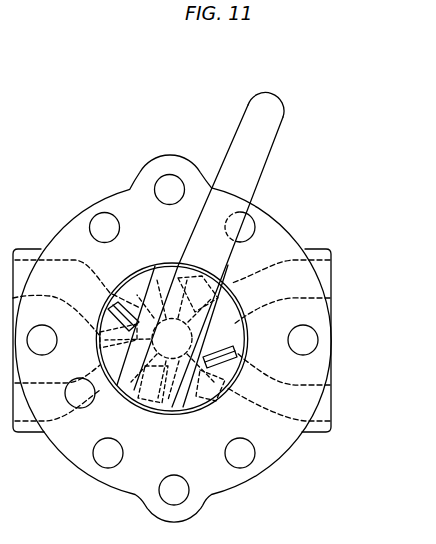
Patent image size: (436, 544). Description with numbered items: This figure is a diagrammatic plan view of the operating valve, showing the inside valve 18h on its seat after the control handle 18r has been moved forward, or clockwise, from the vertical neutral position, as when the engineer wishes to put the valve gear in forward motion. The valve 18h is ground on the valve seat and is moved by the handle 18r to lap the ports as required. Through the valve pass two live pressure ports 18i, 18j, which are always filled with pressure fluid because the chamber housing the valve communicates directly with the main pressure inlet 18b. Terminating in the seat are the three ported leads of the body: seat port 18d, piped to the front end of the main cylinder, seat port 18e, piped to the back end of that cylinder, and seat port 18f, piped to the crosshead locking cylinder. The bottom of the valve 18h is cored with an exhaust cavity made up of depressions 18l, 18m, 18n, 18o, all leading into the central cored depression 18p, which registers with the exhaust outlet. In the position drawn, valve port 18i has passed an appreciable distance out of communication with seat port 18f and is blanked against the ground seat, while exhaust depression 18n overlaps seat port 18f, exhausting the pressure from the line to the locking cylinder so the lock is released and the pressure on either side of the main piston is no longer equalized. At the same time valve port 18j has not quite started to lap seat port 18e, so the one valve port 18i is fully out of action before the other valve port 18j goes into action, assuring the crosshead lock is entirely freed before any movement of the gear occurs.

The main pressure inlet 18b is at (78, 397).
The seat port 18d is at (220, 316).
The seat port 18e is at (222, 396).
The seat port 18f is at (101, 336).
The valve 18h is at (195, 408).
The valve port 18i is at (120, 301).
The valve port 18j is at (233, 350).
The depression 18l is at (183, 288).
The depression 18m is at (137, 268).
The exhaust depression 18n is at (56, 358).
The depression 18o is at (148, 401).
The central cored depression 18p is at (172, 339).
The control handle 18r is at (240, 130).